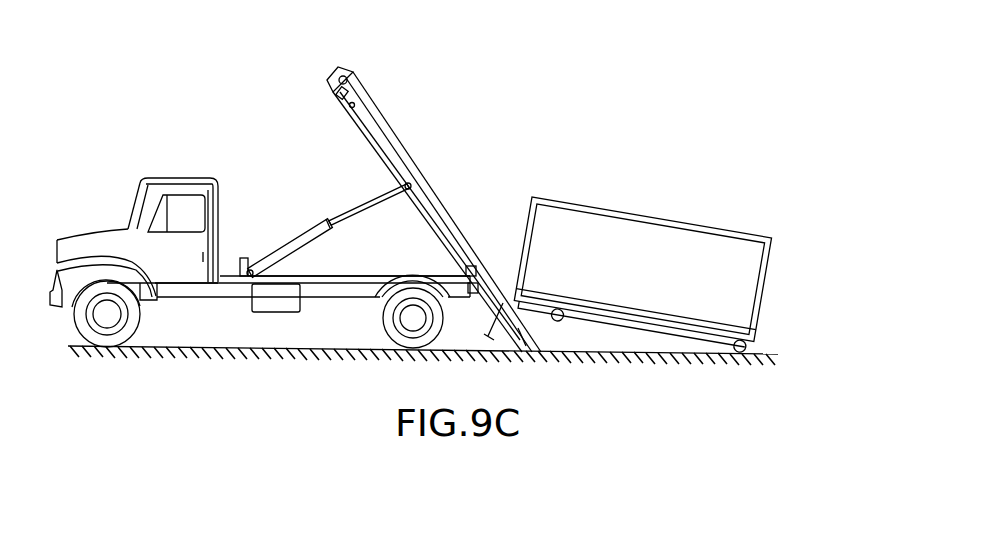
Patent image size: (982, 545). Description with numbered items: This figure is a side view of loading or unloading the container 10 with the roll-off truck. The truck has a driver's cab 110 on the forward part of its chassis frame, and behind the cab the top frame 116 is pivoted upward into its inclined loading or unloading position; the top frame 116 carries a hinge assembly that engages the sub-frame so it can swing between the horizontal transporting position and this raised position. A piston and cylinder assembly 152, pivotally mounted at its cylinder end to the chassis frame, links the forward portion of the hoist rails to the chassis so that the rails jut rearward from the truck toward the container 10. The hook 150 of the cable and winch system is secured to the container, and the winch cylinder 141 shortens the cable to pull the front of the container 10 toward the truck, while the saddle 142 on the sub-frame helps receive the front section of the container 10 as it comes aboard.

The container 10 is at (661, 281).
The driver's cab 110 is at (160, 181).
The top frame 116 is at (366, 137).
The winch cylinder 141 is at (345, 275).
The saddle 142 is at (348, 74).
The lift boom 150 is at (432, 183).
The piston and cylinder assembly 152 is at (263, 258).